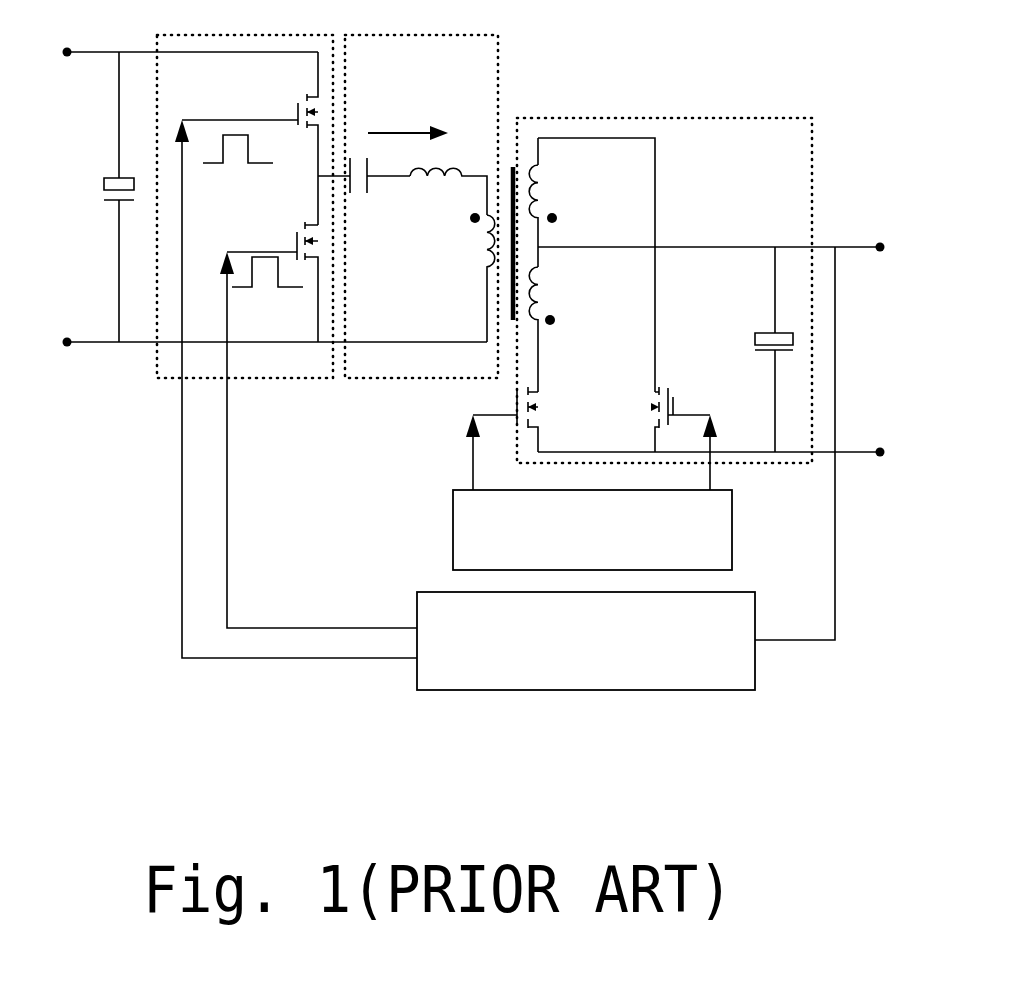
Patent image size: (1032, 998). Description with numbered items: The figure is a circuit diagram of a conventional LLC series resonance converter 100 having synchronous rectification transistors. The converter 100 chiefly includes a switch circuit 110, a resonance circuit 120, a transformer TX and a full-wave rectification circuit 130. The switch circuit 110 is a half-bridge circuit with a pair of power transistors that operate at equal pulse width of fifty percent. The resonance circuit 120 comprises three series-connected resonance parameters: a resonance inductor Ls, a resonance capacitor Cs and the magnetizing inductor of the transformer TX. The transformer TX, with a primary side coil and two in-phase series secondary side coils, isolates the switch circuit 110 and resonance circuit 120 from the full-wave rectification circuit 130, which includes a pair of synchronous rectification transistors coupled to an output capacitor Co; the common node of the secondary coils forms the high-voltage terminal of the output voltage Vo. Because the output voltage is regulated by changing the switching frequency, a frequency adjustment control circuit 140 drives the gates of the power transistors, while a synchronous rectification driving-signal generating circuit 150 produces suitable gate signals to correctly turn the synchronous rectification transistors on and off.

The LLC series resonance converter 100 is at (917, 547).
The switch circuit 110 is at (243, 380).
The resonance circuit 120 is at (427, 380).
The full-wave rectification circuit 130 is at (667, 118).
The frequency adjustment control circuit 140 is at (417, 607).
The synchronous rectification driving-signal generating circuit 150 is at (453, 535).